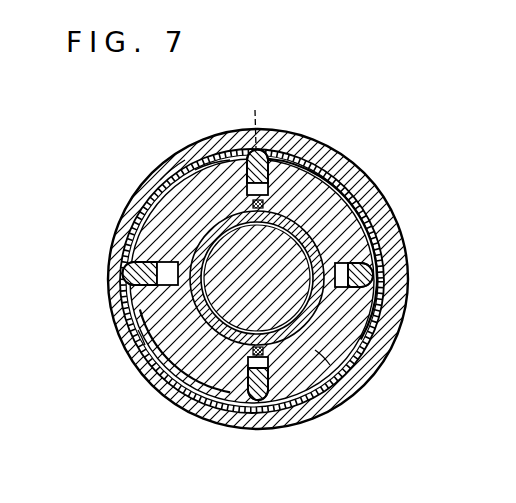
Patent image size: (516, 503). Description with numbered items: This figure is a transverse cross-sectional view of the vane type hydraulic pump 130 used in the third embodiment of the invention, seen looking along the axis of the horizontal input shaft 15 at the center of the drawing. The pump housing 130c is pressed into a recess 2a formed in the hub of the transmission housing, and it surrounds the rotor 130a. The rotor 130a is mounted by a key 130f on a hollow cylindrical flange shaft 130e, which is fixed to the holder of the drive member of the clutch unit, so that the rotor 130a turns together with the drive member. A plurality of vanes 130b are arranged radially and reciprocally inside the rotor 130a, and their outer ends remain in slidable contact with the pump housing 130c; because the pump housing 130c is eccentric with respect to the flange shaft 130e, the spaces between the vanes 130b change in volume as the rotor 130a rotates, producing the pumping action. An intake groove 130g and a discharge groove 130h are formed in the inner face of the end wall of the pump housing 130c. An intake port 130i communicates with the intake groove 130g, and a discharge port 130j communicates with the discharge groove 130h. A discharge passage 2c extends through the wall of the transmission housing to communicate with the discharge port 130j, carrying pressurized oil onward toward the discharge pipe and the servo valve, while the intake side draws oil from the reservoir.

The hydraulic pump 130 is at (400, 212).
The rotor 130a is at (140, 336).
The vanes 130b is at (125, 276).
The pump housing 130c is at (163, 170).
The flange shaft 130e is at (318, 340).
The key 130f is at (337, 173).
The intake groove 130g is at (185, 397).
The discharge groove 130h is at (203, 160).
The intake port 130i is at (258, 402).
The discharge port 130j is at (254, 110).
The recess 2a is at (140, 318).
The discharge passage 2c is at (292, 140).
The input shaft 15 is at (220, 258).